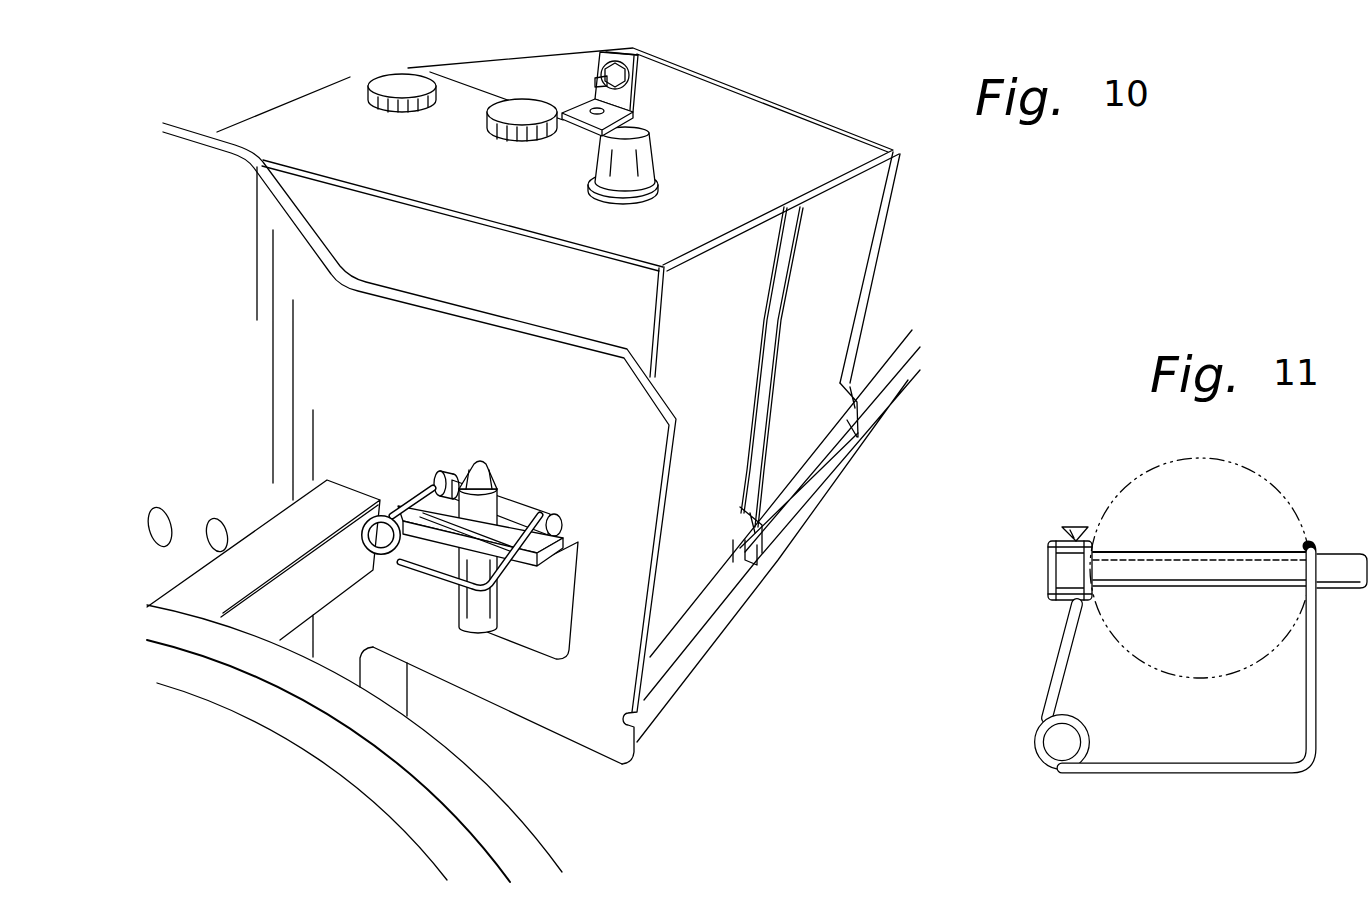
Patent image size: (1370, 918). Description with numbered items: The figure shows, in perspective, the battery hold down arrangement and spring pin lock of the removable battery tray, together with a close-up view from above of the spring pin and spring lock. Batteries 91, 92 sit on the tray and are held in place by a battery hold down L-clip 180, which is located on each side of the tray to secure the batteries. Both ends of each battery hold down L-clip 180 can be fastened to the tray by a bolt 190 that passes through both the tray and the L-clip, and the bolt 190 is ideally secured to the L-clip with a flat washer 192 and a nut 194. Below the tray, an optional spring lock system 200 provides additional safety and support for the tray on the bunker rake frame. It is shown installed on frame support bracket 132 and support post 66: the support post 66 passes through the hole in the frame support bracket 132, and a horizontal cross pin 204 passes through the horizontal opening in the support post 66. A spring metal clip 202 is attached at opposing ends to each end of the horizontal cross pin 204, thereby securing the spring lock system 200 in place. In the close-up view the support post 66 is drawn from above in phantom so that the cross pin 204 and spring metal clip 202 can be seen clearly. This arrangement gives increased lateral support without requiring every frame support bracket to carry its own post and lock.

In FIG. 10, the support post 66 is at (498, 490).
In FIG. 11, the support post 66 is at (1270, 492).
In FIG. 10, the battery 91 is at (489, 193).
In FIG. 10, the battery 92 is at (839, 285).
In FIG. 10, the frame support bracket 132 is at (574, 531).
In FIG. 10, the battery hold down L-clip 180 is at (640, 90).
In FIG. 10, the bolt 190 is at (593, 80).
In FIG. 10, the flat washer 192 is at (615, 44).
In FIG. 10, the nut 194 is at (640, 57).
In FIG. 10, the spring lock system 200 is at (415, 483).
In FIG. 11, the spring lock system 200 is at (1322, 735).
In FIG. 10, the spring metal clip 202 is at (424, 580).
In FIG. 11, the spring metal clip 202 is at (1037, 768).
In FIG. 10, the horizontal cross pin 204 is at (440, 471).
In FIG. 11, the horizontal cross pin 204 is at (1063, 600).